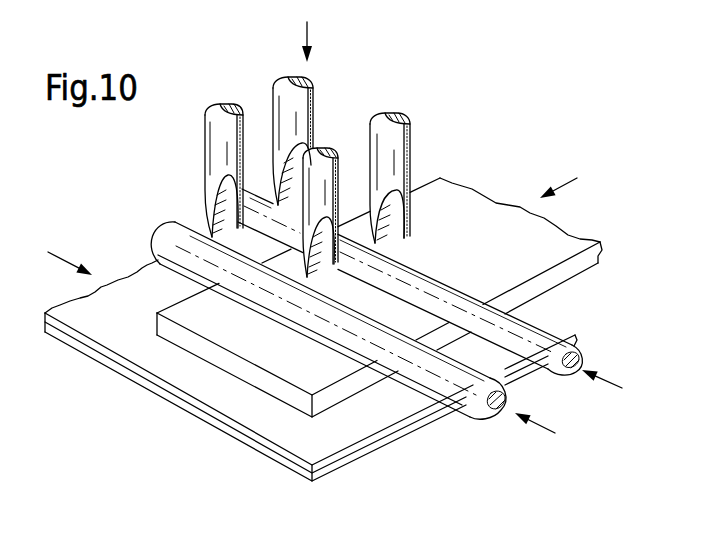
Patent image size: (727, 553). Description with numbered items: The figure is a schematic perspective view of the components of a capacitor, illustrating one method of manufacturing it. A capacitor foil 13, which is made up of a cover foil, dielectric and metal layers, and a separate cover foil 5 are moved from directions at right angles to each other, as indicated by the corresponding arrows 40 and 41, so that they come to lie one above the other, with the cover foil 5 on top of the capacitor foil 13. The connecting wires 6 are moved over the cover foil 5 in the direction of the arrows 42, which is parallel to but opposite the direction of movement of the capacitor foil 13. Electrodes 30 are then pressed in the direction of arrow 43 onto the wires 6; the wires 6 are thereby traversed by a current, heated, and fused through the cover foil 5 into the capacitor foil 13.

The cover foil 5 is at (550, 233).
The connecting wires 6 is at (529, 361).
The capacitor foil 13 is at (185, 398).
The electrodes 30 is at (285, 91).
The arrow 40 is at (50, 252).
The arrow 41 is at (577, 178).
The arrows 42 is at (622, 388).
The arrow 43 is at (308, 31).